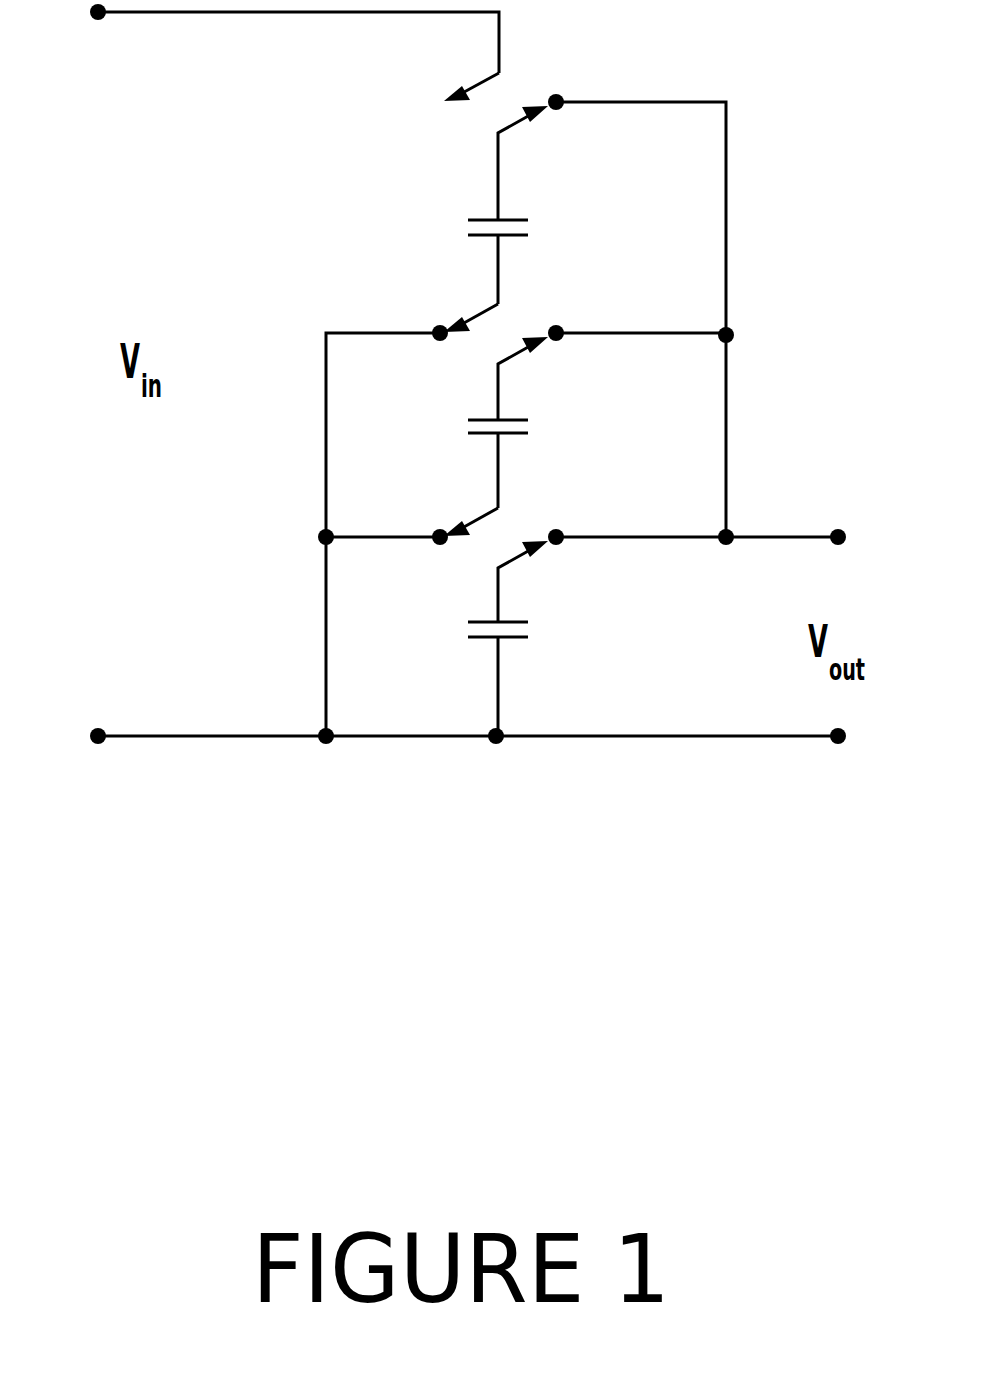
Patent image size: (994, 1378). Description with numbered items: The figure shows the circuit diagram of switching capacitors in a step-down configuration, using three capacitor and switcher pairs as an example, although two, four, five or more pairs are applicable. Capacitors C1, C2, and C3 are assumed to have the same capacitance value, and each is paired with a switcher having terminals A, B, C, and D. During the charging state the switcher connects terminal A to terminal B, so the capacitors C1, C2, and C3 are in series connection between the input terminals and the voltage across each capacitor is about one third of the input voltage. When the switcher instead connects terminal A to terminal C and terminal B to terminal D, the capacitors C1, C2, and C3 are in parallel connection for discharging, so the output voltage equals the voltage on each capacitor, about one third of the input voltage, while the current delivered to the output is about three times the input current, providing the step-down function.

The terminal A is at (489, 285).
The terminal B is at (523, 361).
The terminal C is at (433, 342).
The terminal D is at (563, 344).
The capacitor C1 is at (533, 232).
The capacitor C2 is at (533, 449).
The capacitor C3 is at (528, 622).